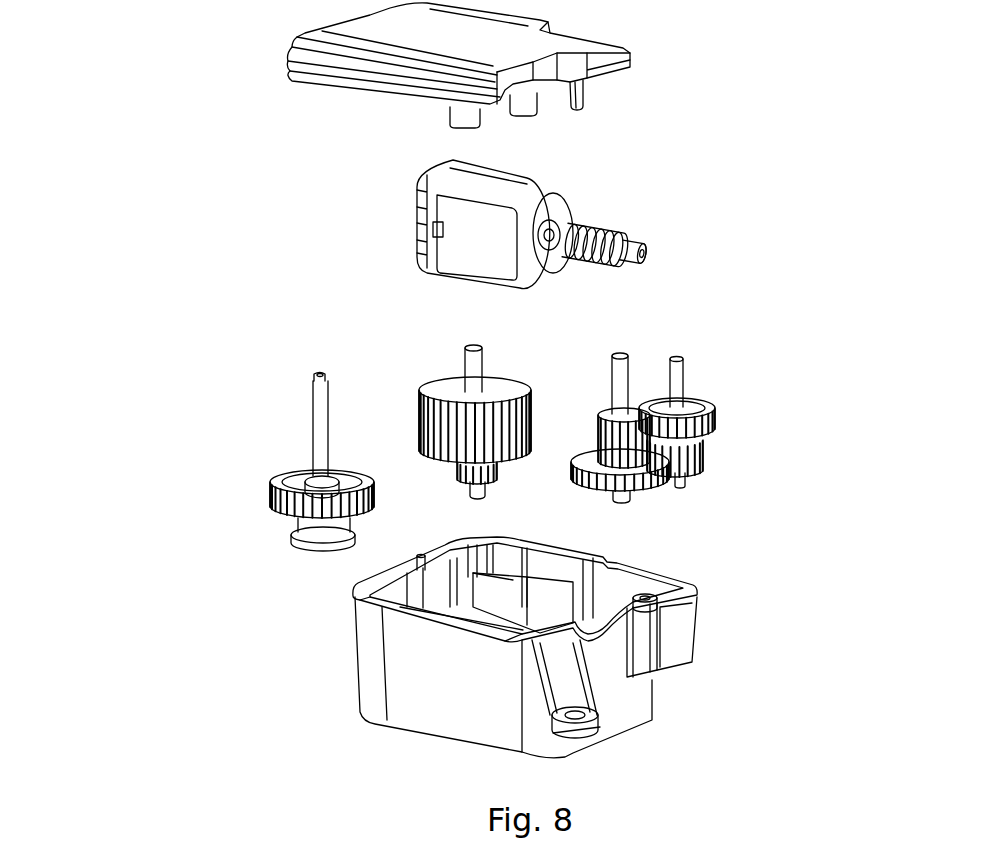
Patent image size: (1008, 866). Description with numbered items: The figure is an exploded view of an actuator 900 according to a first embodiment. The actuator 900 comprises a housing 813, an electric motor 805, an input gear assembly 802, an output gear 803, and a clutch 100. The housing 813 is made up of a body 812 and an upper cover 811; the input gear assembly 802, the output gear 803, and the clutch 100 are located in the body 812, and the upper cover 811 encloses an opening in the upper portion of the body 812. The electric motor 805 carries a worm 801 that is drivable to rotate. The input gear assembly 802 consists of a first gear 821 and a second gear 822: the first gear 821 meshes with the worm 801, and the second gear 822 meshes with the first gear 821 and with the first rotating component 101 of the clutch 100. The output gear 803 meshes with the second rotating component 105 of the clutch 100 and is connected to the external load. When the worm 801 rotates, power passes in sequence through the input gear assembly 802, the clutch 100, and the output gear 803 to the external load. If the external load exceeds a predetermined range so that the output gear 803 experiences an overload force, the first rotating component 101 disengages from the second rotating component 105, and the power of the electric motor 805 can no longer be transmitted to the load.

The actuator 900 is at (782, 87).
The electric motor 805 is at (497, 182).
The worm 801 is at (616, 227).
The upper cover 811 is at (400, 100).
The body 812 is at (387, 647).
The housing 813 is at (142, 273).
The output gear 803 is at (283, 477).
The first rotating component 101 is at (418, 400).
The clutch 100 is at (513, 380).
The second rotating component 105 is at (498, 472).
The first gear 821 is at (712, 402).
The input gear assembly 802 is at (700, 455).
The second gear 822 is at (653, 488).